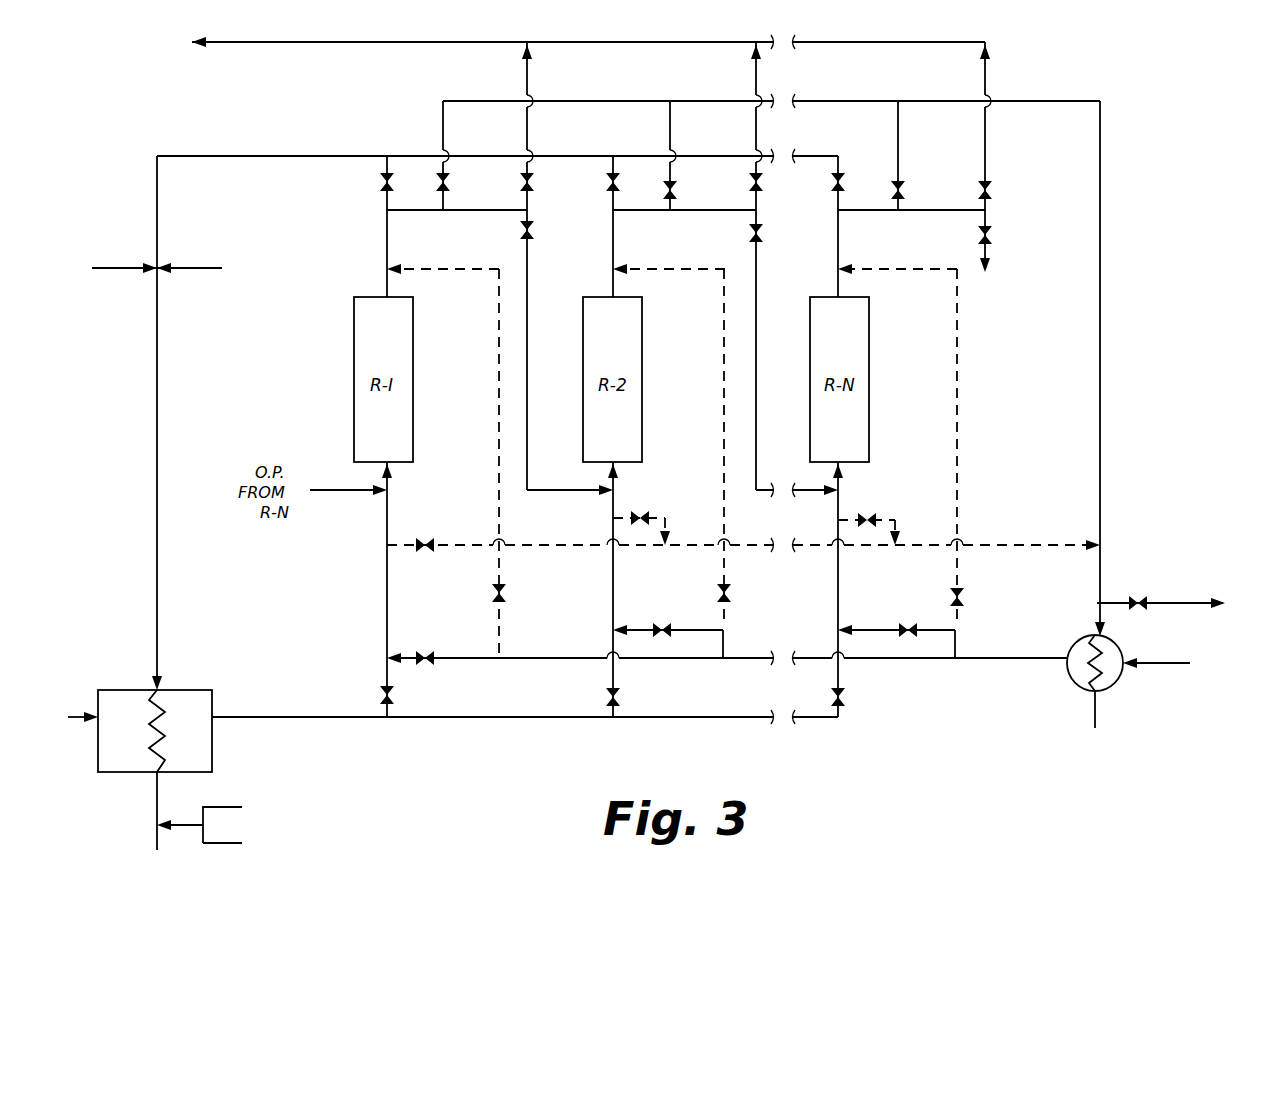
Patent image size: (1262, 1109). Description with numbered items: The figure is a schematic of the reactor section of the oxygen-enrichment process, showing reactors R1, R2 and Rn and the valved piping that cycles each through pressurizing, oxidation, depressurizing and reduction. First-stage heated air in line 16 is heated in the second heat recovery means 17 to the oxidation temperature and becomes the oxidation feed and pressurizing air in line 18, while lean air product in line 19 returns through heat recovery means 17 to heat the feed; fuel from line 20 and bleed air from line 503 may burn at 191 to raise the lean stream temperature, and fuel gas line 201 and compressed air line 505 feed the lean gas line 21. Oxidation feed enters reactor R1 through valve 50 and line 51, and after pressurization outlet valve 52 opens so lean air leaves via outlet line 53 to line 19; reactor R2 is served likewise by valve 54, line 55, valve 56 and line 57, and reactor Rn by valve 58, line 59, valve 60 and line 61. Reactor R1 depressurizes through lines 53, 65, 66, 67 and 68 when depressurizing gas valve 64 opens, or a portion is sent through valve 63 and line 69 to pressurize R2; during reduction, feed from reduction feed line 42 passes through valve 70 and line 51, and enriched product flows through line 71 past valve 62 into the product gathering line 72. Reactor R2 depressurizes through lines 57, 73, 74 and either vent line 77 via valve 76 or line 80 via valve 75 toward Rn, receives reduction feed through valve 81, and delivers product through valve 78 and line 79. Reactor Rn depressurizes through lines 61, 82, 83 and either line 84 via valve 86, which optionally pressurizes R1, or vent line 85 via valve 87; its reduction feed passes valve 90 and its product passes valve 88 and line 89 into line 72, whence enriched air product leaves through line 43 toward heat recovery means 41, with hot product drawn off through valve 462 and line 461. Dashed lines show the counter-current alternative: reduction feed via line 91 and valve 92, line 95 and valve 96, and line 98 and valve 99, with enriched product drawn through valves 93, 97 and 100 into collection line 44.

The first-stage heated air line 16 is at (68, 716).
The second heat recovery means 17 is at (185, 690).
The oxidation feed air line 18 is at (240, 717).
The lean air product line 19 is at (292, 142).
The fuel line 20 is at (195, 268).
The lean gas line 21 is at (158, 818).
The heat recovery means 41 is at (1122, 648).
The reduction feed line 42 is at (1020, 658).
The enriched air product line 43 is at (1100, 600).
The counter-current enriched air product collection line 44 is at (687, 545).
The reactor R1 inlet valve 50 is at (380, 695).
The reactor R1 inlet line 51 is at (384, 613).
The reactor R1 outlet valve 52 is at (380, 184).
The reactor R1 outlet line 53 is at (385, 238).
The reactor R2 inlet valve 54 is at (605, 697).
The reactor R2 inlet line 55 is at (610, 604).
The reactor R2 outlet valve 56 is at (608, 183).
The reactor R2 outlet line 57 is at (612, 240).
The reactor Rn inlet valve 58 is at (848, 698).
The reactor Rn inlet line 59 is at (840, 612).
The reactor Rn outlet valve 60 is at (835, 185).
The reactor Rn outlet line 61 is at (835, 269).
The enriched product valve for reactor R1 62 is at (440, 186).
The optional pressurizing valve 63 is at (520, 230).
The depressurizing gas valve 64 is at (520, 184).
The reactor R1 depressurizing line 65 is at (417, 210).
The depressurizing line 66 is at (473, 210).
The depressurizing vent line 67 is at (522, 140).
The depressurizing gas vent line 68 is at (500, 42).
The optional pressurizing line 69 is at (545, 490).
The reduction feed valve for reactor R1 70 is at (425, 652).
The enriched product line for reactor R1 71 is at (443, 133).
The product gases gathering line 72 is at (470, 101).
The reactor R2 depressurizing line 73 is at (648, 212).
The depressurizing line 74 is at (752, 210).
The optional pressurizing valve for reactor Rn 75 is at (763, 235).
The depressurizing vent valve for reactor R2 76 is at (763, 183).
The depressurizing vent line 77 is at (756, 140).
The enriched air product valve for reactor R2 78 is at (678, 190).
The enriched product line for reactor R2 79 is at (670, 142).
The optional pressurizing line 80 is at (757, 338).
The reduction feed valve for reactor R2 81 is at (662, 628).
The reactor Rn depressurizing line 82 is at (868, 212).
The depressurizing line 83 is at (945, 212).
The optional pressurizing line 84 is at (990, 266).
The depressurizing vent line 85 is at (985, 152).
The optional pressurizing valve for reactor Rn 86 is at (993, 235).
The depressurizing vent valve for reactor Rn 87 is at (993, 190).
The enriched air product valve for reactor Rn 88 is at (905, 190).
The enriched product line for reactor Rn 89 is at (900, 133).
The reduction feed valve for reactor Rn 90 is at (907, 625).
The counter-current reduction feed line for reactor R1 91 is at (503, 512).
The counter-current reduction feed valve for reactor R1 92 is at (507, 593).
The counter-current product valve for reactor R1 93 is at (423, 540).
The counter-current reduction feed line for reactor R2 95 is at (725, 507).
The counter-current reduction feed valve for reactor R2 96 is at (732, 593).
The counter-current product valve for reactor R2 97 is at (640, 512).
The counter-current reduction feed line for reactor Rn 98 is at (957, 508).
The counter-current reduction feed valve for reactor Rn 99 is at (963, 598).
The counter-current product valve for reactor Rn 100 is at (868, 514).
The combustion zone of lean air line 191 is at (158, 637).
The fuel gas line 201 is at (242, 807).
The hot product draw-off line 461 is at (1186, 663).
The draw-off valve 462 is at (1148, 602).
The compressed air bleed line 503 is at (105, 268).
The compressed air bleed line 505 is at (242, 843).